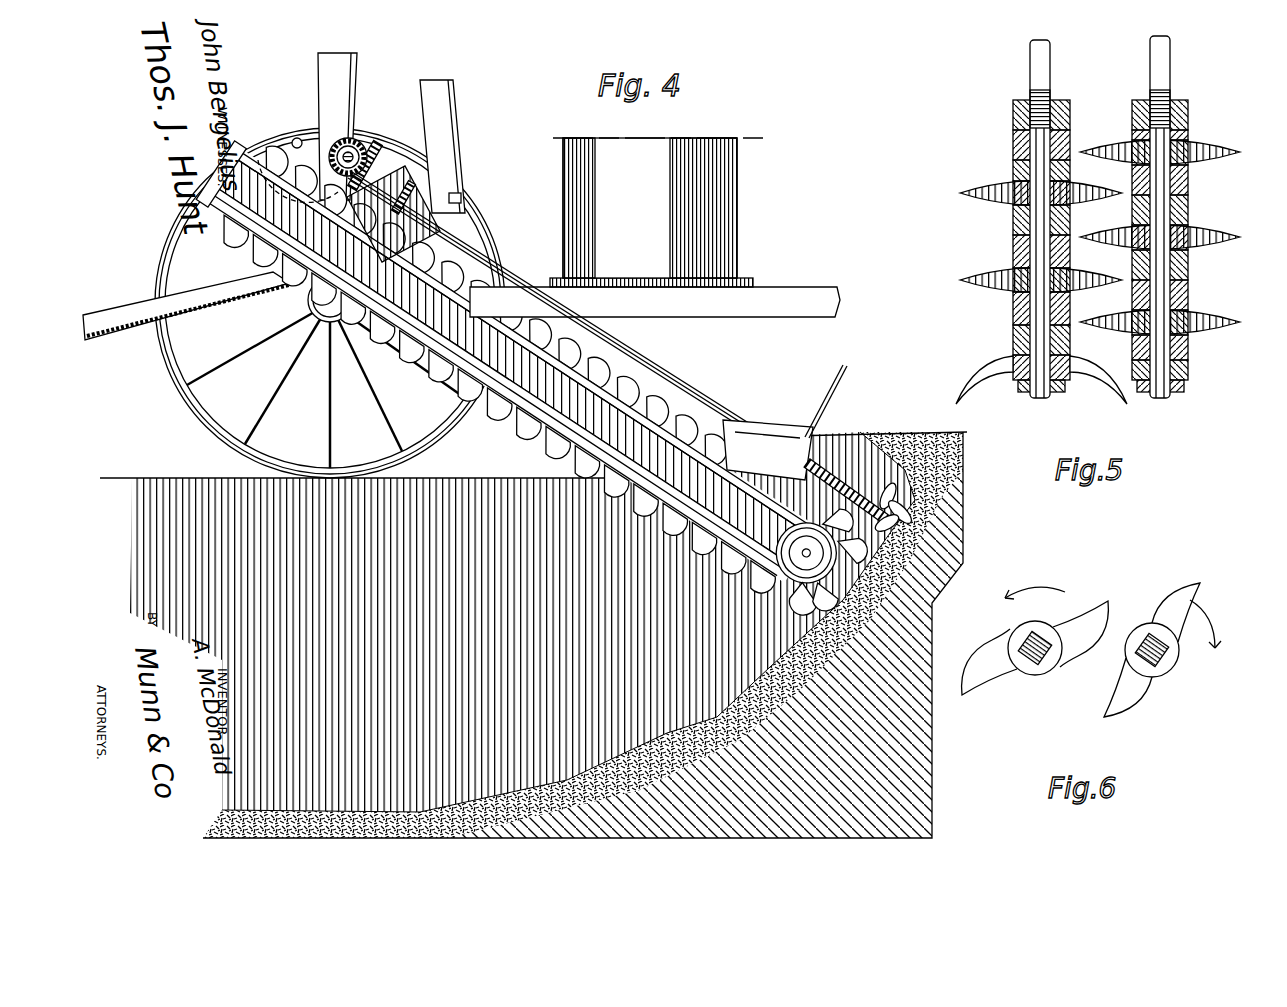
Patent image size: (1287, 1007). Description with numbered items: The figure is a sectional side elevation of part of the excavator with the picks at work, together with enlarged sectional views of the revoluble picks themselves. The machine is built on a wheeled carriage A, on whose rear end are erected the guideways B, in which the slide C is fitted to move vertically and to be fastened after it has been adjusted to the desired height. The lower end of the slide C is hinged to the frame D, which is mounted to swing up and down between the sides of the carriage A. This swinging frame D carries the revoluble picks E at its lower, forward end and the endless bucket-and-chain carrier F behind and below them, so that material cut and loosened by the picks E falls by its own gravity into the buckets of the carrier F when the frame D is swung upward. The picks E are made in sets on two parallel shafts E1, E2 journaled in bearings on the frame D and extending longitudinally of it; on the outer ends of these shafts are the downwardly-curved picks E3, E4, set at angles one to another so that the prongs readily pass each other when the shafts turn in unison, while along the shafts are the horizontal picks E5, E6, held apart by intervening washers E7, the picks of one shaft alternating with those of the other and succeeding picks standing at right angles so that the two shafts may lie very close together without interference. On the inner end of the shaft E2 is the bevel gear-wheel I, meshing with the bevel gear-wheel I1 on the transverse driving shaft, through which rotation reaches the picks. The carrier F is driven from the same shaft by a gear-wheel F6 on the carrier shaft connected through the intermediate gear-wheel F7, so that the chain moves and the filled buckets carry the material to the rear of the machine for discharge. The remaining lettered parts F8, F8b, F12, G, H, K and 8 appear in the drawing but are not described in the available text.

In FIG. 4, the wheeled carriage A is at (820, 294).
In FIG. 4, the guideways B is at (533, 635).
In FIG. 4, the slide C is at (330, 303).
In FIG. 4, the frame D is at (533, 376).
In FIG. 4, the revoluble picks E is at (847, 456).
In FIG. 5, the revoluble picks E is at (1012, 145).
In FIG. 6, the revoluble picks E is at (1035, 630).
In FIG. 4, the shaft E1 is at (660, 366).
In FIG. 5, the shaft E2 is at (1170, 60).
In FIG. 6, the shaft E2 is at (1162, 656).
In FIG. 5, the downwardly-curved pick E3 is at (978, 364).
In FIG. 5, the downwardly-curved pick E4 is at (1188, 372).
In FIG. 5, the horizontal picks E5 is at (985, 205).
In FIG. 6, the horizontal picks E5 is at (990, 672).
In FIG. 5, the horizontal picks E6 is at (1212, 146).
In FIG. 6, the horizontal picks E6 is at (1162, 641).
In FIG. 5, the washers E7 is at (1030, 60).
In FIG. 6, the washers E7 is at (1032, 664).
In FIG. 4, the endless carrier F is at (262, 160).
In FIG. 4, the gear-wheel F6 is at (282, 140).
In FIG. 4, the intermediate gear-wheel F7 is at (310, 136).
In FIG. 4, the support post bolt F8 is at (456, 192).
In FIG. 4, the rack F8b is at (404, 197).
In FIG. 4, the bucket F12 is at (640, 408).
In FIG. 4, the adjusting rod G is at (818, 405).
In FIG. 4, the tongue beam H is at (186, 306).
In FIG. 4, the bevel gear-wheel I is at (372, 163).
In FIG. 4, the bevel gear-wheel I1 is at (362, 138).
In FIG. 4, the winding drum K is at (658, 212).
In FIG. 4, the support post 8 is at (347, 138).